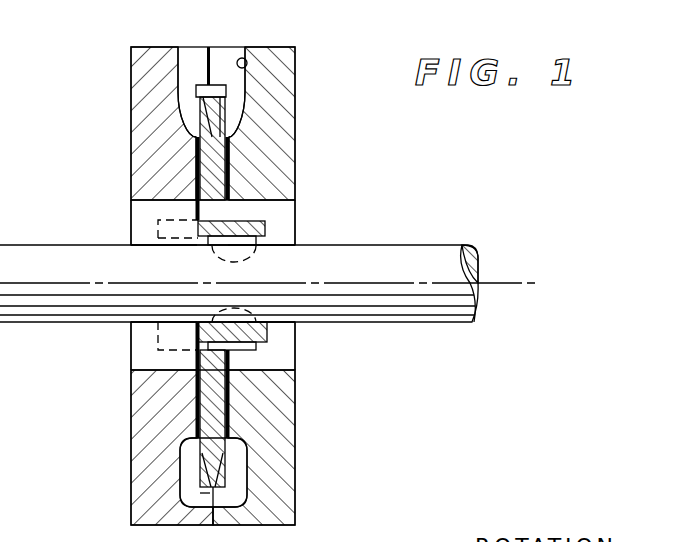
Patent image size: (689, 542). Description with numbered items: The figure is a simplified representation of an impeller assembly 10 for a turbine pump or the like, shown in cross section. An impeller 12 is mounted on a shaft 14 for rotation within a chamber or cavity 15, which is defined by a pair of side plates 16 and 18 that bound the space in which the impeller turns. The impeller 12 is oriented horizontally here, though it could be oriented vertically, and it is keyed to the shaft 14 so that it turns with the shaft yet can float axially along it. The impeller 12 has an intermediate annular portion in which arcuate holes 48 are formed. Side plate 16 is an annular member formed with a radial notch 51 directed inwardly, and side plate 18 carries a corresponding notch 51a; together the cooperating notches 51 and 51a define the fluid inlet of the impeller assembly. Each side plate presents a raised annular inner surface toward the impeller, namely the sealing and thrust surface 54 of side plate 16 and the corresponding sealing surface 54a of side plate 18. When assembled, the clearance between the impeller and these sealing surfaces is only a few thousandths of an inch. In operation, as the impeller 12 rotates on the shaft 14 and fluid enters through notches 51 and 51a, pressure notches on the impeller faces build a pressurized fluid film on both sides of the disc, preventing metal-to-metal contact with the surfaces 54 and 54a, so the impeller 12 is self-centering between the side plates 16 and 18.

The impeller assembly 10 is at (76, 371).
The impeller 12 is at (208, 358).
The shaft 14 is at (419, 223).
The chamber or cavity 15 is at (224, 85).
The side plate 16 is at (131, 146).
The side plate 18 is at (295, 148).
The arcuate holes 48 is at (213, 204).
The radial notch 51 is at (190, 47).
The radial notch 51a is at (252, 66).
The raised annular inner surface 54 is at (206, 100).
The sealing surface 54a is at (224, 100).